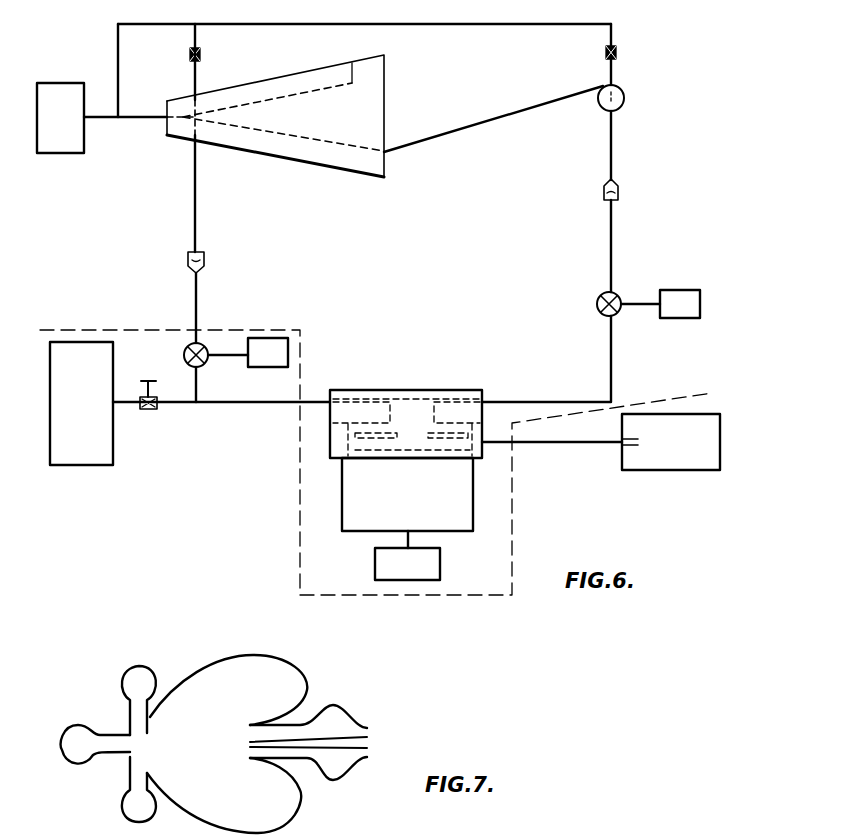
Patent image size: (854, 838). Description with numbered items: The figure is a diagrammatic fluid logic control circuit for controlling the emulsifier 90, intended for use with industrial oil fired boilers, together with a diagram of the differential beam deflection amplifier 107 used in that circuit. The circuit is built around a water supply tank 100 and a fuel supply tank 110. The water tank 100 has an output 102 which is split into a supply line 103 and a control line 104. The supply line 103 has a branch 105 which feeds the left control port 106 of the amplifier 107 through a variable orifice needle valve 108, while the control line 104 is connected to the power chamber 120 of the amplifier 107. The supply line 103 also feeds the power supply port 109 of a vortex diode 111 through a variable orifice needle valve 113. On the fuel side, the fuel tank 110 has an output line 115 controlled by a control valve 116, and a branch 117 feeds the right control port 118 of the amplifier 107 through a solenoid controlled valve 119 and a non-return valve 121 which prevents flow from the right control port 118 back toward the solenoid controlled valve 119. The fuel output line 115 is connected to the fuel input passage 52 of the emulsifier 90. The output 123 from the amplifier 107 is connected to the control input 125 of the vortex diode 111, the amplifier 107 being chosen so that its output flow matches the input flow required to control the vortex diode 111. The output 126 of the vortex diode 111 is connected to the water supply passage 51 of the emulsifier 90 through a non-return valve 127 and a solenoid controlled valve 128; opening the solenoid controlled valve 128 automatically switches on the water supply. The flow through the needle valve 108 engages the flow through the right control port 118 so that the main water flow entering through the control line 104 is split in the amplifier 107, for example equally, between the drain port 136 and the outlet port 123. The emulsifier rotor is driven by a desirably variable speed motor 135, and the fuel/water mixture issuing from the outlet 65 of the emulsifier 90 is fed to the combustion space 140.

In FIG. 6, the water supply tank 100 is at (62, 153).
In FIG. 6, the output 102 is at (118, 108).
In FIG. 6, the supply line 103 is at (117, 32).
In FIG. 6, the control line 104 is at (120, 118).
In FIG. 6, the branch 105 is at (197, 80).
In FIG. 6, the left control port 106 is at (189, 102).
In FIG. 7, the left control port 106 is at (124, 684).
In FIG. 6, the differential beam deflection amplifier 107 is at (402, 93).
In FIG. 7, the differential beam deflection amplifier 107 is at (330, 682).
In FIG. 6, the variable orifice needle valve 108 is at (218, 47).
In FIG. 6, the power supply port 109 is at (615, 74).
In FIG. 6, the fuel supply tank 110 is at (83, 468).
In FIG. 6, the vortex diode 111 is at (633, 102).
In FIG. 6, the variable orifice needle valve 113 is at (630, 53).
In FIG. 6, the output line 115 is at (128, 404).
In FIG. 6, the control valve 116 is at (157, 408).
In FIG. 6, the branch 117 is at (194, 302).
In FIG. 6, the right control port 118 is at (197, 178).
In FIG. 7, the right control port 118 is at (125, 790).
In FIG. 6, the solenoid controlled valve 119 is at (207, 363).
In FIG. 6, the power chamber 120 is at (157, 120).
In FIG. 7, the power chamber 120 is at (66, 752).
In FIG. 6, the non-return valve 121 is at (205, 262).
In FIG. 6, the output 123 is at (437, 140).
In FIG. 7, the output 123 is at (335, 777).
In FIG. 6, the control input 125 is at (541, 106).
In FIG. 6, the output 126 is at (614, 168).
In FIG. 6, the non-return valve 127 is at (619, 194).
In FIG. 6, the solenoid controlled valve 128 is at (616, 296).
In FIG. 6, the motor 135 is at (375, 566).
In FIG. 6, the drain port 136 is at (352, 65).
In FIG. 7, the drain port 136 is at (333, 725).
In FIG. 6, the combustion space 140 is at (693, 470).
In FIG. 6, the water supply passage 51 is at (460, 399).
In FIG. 6, the fuel input passage 52 is at (367, 399).
In FIG. 6, the outlet 65 is at (482, 446).
In FIG. 6, the emulsifier 90 is at (488, 508).